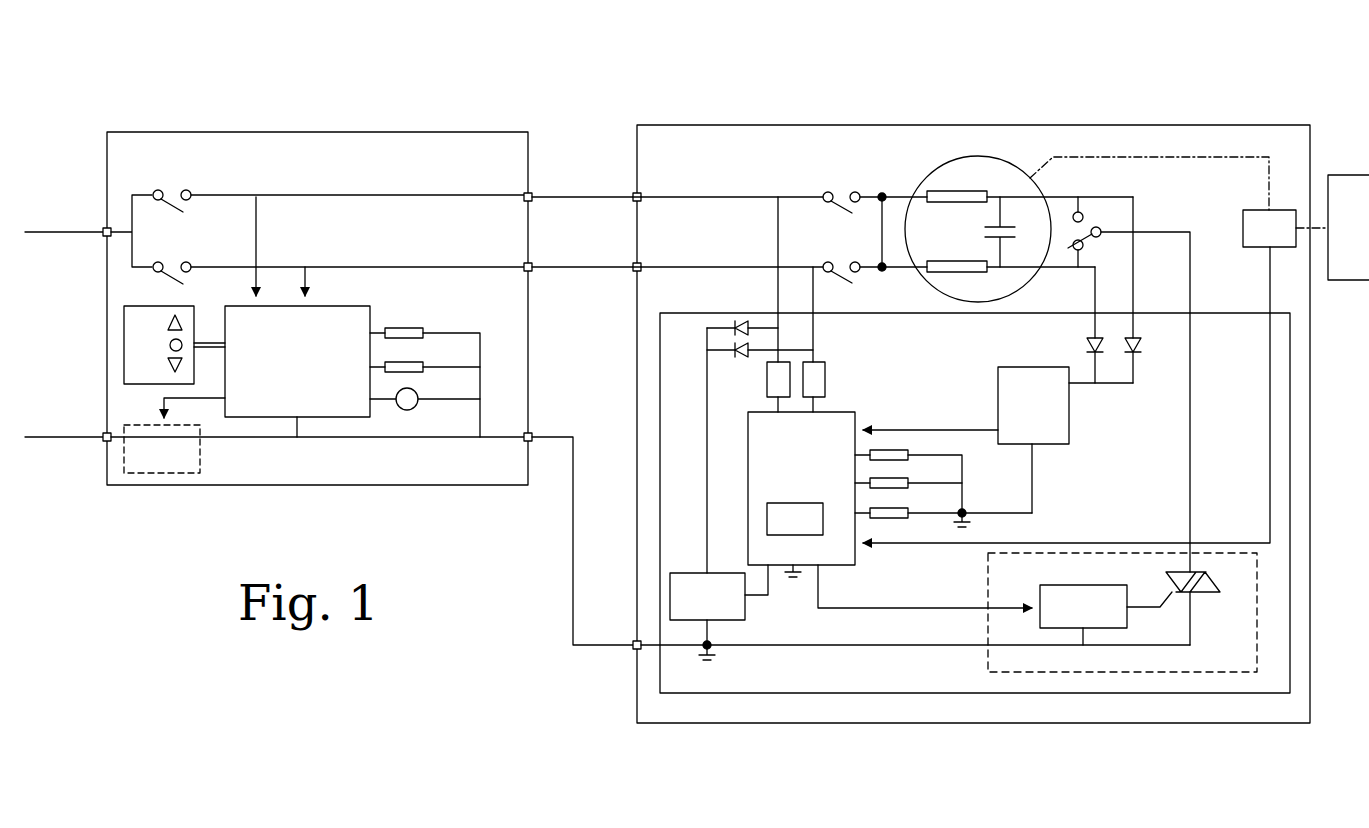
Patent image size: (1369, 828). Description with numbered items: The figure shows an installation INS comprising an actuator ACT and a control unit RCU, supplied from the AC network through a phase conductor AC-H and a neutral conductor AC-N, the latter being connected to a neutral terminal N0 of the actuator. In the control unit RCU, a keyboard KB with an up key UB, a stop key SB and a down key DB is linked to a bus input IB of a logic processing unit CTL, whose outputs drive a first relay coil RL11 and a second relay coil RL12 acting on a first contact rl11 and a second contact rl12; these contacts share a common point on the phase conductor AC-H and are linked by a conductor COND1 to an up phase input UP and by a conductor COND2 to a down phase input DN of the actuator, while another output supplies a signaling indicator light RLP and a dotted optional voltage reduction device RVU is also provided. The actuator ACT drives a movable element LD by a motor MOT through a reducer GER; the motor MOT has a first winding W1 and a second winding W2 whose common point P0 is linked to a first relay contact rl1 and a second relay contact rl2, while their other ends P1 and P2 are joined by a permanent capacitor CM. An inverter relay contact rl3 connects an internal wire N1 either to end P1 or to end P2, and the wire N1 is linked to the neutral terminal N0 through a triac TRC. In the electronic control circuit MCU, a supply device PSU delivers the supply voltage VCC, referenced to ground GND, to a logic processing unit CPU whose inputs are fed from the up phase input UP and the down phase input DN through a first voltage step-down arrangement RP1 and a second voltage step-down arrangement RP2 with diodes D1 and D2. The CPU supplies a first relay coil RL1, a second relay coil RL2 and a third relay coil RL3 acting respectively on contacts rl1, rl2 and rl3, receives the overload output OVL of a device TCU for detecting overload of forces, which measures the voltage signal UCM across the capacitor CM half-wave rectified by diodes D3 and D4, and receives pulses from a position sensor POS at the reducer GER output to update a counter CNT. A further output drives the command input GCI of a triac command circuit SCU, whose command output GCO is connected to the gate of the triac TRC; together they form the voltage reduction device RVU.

The installation INS is at (554, 118).
The control unit RCU is at (317, 308).
The actuator ACT is at (973, 424).
The electronic control circuit MCU is at (975, 503).
The phase conductor AC-H is at (88, 231).
The neutral conductor AC-N is at (329, 529).
The neutral terminal N0 is at (900, 635).
The first contact rl11 is at (337, 190).
The second contact rl12 is at (337, 262).
The conductor COND1 is at (554, 184).
The conductor COND2 is at (605, 255).
The up phase input UP is at (618, 180).
The down phase input DN is at (618, 254).
The keyboard KB is at (159, 345).
The control key UB is at (170, 322).
The control key SB is at (170, 346).
The control key DB is at (170, 366).
The bus input IB is at (220, 349).
The logic processing unit CTL is at (297, 371).
The first relay coil RL11 is at (425, 375).
The second relay coil RL12 is at (425, 360).
The signaling indicator light RLP is at (425, 395).
The first relay contact rl1 is at (875, 192).
The second relay contact rl2 is at (875, 262).
The common point P0 is at (872, 232).
The motor MOT is at (974, 226).
The first winding W1 is at (1030, 186).
The second winding W2 is at (1011, 279).
The permanent capacitor CM is at (1014, 232).
The end of the first winding P1 is at (1101, 258).
The end of the second winding P2 is at (1084, 302).
The inverter relay contact rl3 is at (1091, 239).
The internal wire N1 is at (1145, 429).
The reducer GER is at (1179, 202).
The movable element LD is at (1348, 216).
The position sensor POS is at (1066, 395).
The diode D1 is at (730, 447).
The diode D2 is at (748, 354).
The first voltage step-down arrangement RP1 is at (764, 304).
The second voltage step-down arrangement RP2 is at (832, 339).
The logic processing unit CPU is at (802, 494).
The counter CNT is at (795, 519).
The overload output OVL is at (930, 420).
The first relay coil RL1 is at (908, 475).
The second relay coil RL2 is at (908, 476).
The third relay coil RL3 is at (943, 511).
The device for detecting overload of forces TCU is at (1033, 440).
The voltage signal UCM is at (1101, 396).
The diode D3 is at (1127, 351).
The diode D4 is at (1086, 351).
The supply device PSU is at (707, 609).
The supply voltage VCC is at (767, 591).
The ground GND is at (725, 642).
The command input GCI is at (925, 596).
The triac command circuit SCU is at (1083, 615).
The command output GCO is at (1149, 610).
The triac TRC is at (1196, 573).
The device with triac for reducing the voltage RVU is at (1122, 612).